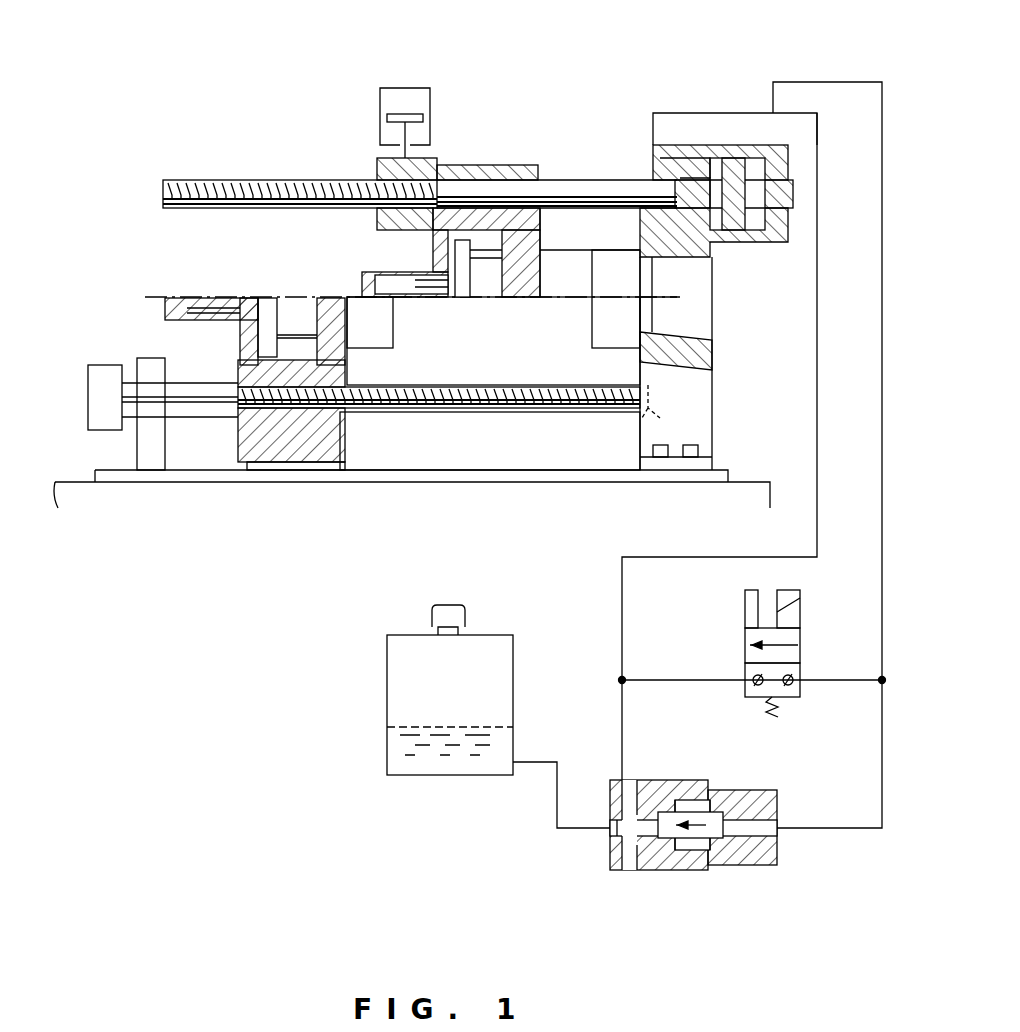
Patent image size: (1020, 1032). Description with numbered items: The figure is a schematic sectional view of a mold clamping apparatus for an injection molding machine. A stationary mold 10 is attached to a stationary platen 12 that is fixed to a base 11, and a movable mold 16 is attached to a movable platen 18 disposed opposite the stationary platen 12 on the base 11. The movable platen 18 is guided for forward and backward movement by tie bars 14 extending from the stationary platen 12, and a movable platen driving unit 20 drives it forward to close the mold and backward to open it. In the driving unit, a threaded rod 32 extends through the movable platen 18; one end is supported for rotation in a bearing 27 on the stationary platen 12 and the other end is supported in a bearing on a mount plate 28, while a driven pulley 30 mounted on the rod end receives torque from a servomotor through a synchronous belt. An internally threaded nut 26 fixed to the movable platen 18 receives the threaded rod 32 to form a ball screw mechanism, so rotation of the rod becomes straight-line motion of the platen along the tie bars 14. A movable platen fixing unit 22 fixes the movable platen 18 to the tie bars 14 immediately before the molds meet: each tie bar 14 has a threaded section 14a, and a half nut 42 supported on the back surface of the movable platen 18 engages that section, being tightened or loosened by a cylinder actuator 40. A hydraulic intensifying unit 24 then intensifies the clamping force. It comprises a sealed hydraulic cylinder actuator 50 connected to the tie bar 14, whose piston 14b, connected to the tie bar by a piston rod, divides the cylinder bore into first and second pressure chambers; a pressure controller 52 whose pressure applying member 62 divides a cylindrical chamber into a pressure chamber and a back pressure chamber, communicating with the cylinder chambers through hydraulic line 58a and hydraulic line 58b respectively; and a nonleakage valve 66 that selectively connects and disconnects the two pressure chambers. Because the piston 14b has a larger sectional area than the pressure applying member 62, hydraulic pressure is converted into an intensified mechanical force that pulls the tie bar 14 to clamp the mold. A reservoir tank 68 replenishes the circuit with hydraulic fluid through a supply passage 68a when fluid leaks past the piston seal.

The stationary mold 10 is at (593, 327).
The base 11 is at (590, 475).
The stationary platen 12 is at (710, 310).
The tie bar 14 is at (553, 182).
The threaded section 14a is at (228, 182).
The piston 14b is at (737, 223).
The movable mold 16 is at (382, 333).
The movable platen 18 is at (283, 455).
The movable platen driving unit 20 is at (525, 413).
The movable platen fixing unit 22 is at (352, 88).
The hydraulic intensifying unit 24 is at (612, 140).
The internally threaded nut 26 is at (367, 413).
The bearing 27 is at (640, 430).
The mount plate 28 is at (155, 450).
The driven pulley 30 is at (102, 373).
The threaded rod 32 is at (468, 410).
The cylinder actuator 40 is at (405, 88).
The half nut 42 is at (375, 160).
The sealed hydraulic cylinder actuator 50 is at (695, 107).
The pressure controller 52 is at (607, 852).
The hydraulic line 58a is at (817, 442).
The hydraulic line 58b is at (880, 446).
The pressure applying member 62 is at (665, 835).
The nonleakage valve 66 is at (745, 622).
The reservoir tank 68 is at (385, 688).
The supply passage 68a is at (555, 799).